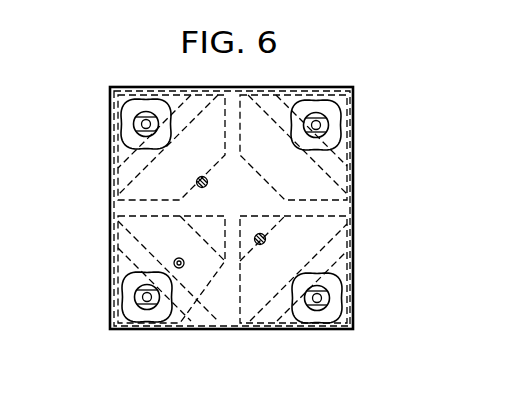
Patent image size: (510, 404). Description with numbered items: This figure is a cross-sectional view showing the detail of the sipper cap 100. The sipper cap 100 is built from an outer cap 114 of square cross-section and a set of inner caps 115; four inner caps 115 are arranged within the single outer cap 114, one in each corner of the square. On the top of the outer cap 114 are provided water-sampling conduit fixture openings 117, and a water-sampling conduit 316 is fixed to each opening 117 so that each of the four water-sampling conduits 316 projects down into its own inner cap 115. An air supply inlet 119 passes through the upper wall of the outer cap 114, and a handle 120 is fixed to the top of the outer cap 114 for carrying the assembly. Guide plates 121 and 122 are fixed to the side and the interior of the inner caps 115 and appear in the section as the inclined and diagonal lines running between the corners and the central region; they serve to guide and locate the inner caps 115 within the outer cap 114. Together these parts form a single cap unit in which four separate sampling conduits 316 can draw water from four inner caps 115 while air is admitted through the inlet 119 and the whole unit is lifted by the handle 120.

The sipper cap 100 is at (362, 108).
The outer cap 114 is at (109, 151).
The inner caps 115 is at (233, 322).
The water-sampling conduit fixture opening 117 is at (148, 323).
The air supply inlet 119 is at (180, 258).
The handle 120 is at (266, 240).
The guide plate 121 is at (250, 183).
The guide plate 122 is at (340, 156).
The water-sampling conduits 316 is at (135, 294).